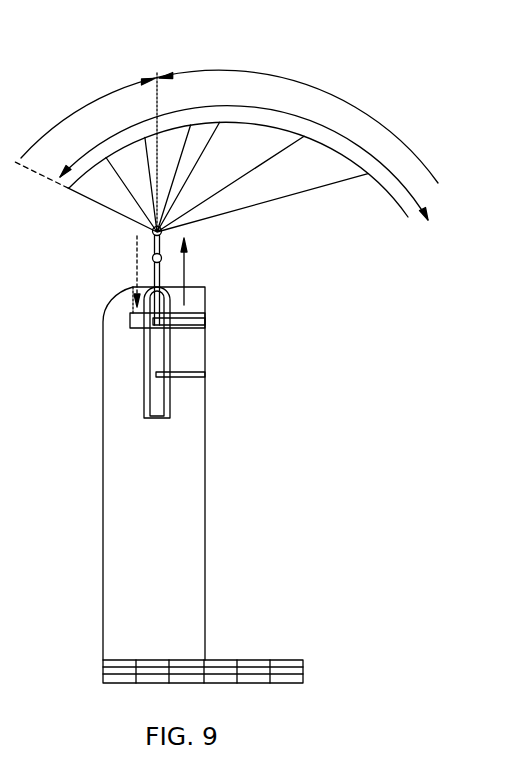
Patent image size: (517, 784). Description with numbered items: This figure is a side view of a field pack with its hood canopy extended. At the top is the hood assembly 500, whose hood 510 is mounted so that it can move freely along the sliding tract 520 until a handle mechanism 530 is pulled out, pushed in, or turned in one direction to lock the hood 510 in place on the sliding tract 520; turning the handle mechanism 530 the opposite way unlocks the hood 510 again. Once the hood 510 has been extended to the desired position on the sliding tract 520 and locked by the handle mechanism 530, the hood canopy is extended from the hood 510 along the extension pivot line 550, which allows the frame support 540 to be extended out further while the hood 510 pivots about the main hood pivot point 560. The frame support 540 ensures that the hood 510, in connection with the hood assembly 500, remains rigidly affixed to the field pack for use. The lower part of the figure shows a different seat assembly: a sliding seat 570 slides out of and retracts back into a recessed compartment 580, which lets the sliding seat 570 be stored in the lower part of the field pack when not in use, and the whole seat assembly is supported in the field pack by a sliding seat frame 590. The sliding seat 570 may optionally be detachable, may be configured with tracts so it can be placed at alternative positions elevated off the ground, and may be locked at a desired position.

The hood assembly 500 is at (392, 64).
The hood 510 is at (205, 96).
The sliding tract 520 is at (178, 317).
The handle mechanism 530 is at (183, 327).
The frame support 540 is at (160, 278).
The extension pivot line 550 is at (313, 190).
The main hood pivot point 560 is at (140, 217).
The sliding seat 570 is at (275, 660).
The recessed compartment 580 is at (204, 660).
The sliding seat frame 590 is at (102, 673).